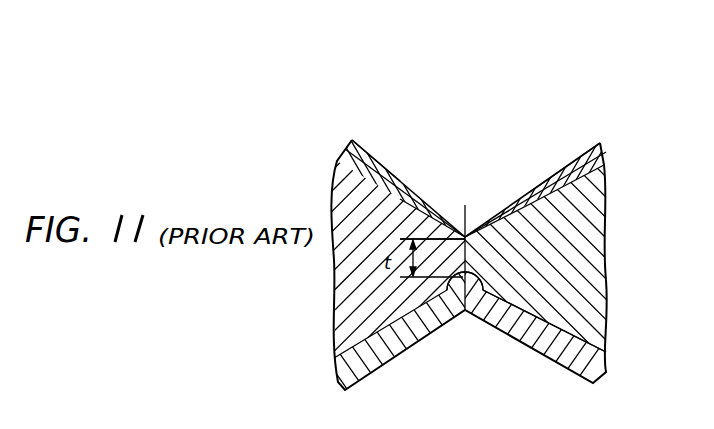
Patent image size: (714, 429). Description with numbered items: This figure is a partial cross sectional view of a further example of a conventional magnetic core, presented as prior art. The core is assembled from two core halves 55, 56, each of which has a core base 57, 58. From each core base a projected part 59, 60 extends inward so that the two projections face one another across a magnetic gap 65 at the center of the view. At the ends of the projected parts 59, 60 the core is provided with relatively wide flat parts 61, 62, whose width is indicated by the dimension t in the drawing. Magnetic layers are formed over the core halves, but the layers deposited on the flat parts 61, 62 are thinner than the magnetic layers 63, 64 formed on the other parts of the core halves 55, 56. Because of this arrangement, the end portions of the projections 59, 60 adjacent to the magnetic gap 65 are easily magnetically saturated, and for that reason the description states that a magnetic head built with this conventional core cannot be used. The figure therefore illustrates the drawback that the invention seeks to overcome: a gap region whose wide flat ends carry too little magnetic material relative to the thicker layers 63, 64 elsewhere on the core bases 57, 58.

The core half 55 is at (496, 129).
The core half 56 is at (626, 96).
The core base 57 is at (380, 197).
The core base 58 is at (478, 267).
The projected part 59 is at (448, 261).
The projected part 60 is at (524, 186).
The flat part 61 is at (479, 296).
The flat part 62 is at (450, 294).
The magnetic layer 63 is at (458, 218).
The magnetic layer 64 is at (509, 212).
The magnetic gap 65 is at (465, 216).